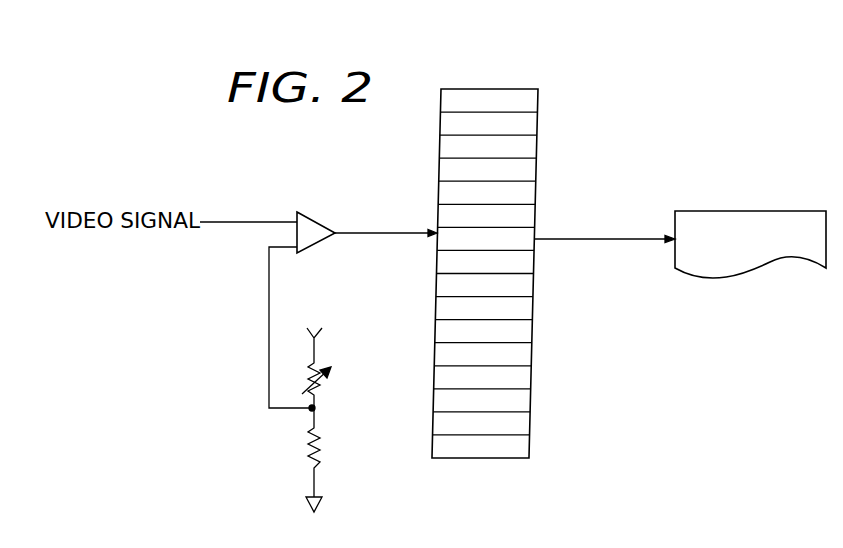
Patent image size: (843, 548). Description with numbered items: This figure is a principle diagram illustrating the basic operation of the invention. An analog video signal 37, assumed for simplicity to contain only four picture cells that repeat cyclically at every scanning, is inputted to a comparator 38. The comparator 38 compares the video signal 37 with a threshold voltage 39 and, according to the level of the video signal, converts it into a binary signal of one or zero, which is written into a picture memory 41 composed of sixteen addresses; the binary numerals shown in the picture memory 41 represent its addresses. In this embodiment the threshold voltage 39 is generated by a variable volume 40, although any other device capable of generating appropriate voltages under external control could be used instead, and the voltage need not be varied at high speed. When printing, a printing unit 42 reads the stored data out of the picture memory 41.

The analog video signal 37 is at (235, 222).
The comparator 38 is at (325, 226).
The threshold voltage 39 is at (269, 308).
The variable volume 40 is at (325, 360).
The picture memory 41 is at (538, 112).
The printing unit 42 is at (768, 211).